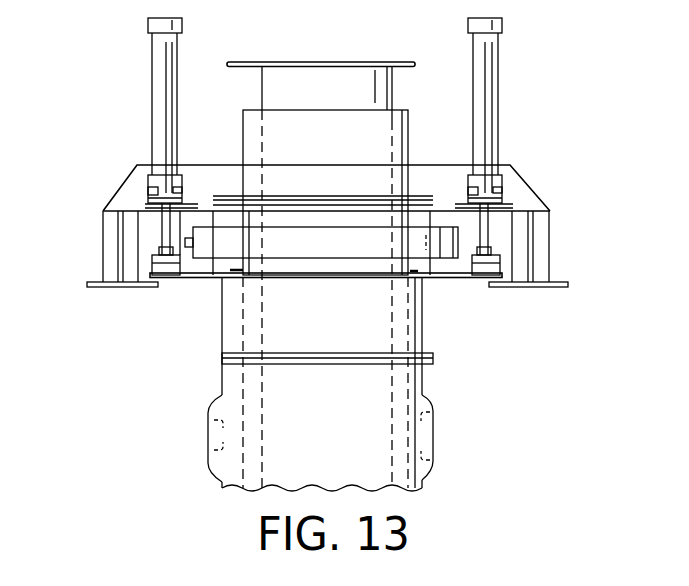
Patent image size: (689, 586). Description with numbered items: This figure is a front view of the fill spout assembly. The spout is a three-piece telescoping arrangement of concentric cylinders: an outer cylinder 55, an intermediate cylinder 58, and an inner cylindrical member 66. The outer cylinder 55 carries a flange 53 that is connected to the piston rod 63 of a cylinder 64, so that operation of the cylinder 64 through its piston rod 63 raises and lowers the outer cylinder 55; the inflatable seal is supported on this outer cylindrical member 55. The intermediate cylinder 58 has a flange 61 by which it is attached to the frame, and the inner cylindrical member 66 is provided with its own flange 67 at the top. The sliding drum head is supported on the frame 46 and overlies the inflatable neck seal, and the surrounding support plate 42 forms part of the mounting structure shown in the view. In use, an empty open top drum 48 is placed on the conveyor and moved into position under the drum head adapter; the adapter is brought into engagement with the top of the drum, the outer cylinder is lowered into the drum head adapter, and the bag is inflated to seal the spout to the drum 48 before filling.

The support plate 42 is at (528, 187).
The frame 46 is at (188, 242).
The empty open top drum 48 is at (158, 263).
The flange 53 is at (193, 278).
The outer cylinder 55 is at (425, 342).
The intermediate cylinder 58 is at (410, 143).
The flange 61 is at (438, 447).
The piston rod 63 is at (167, 222).
The cylinder 64 is at (147, 102).
The inner cylindrical member 66 is at (392, 90).
The flange 67 is at (412, 62).